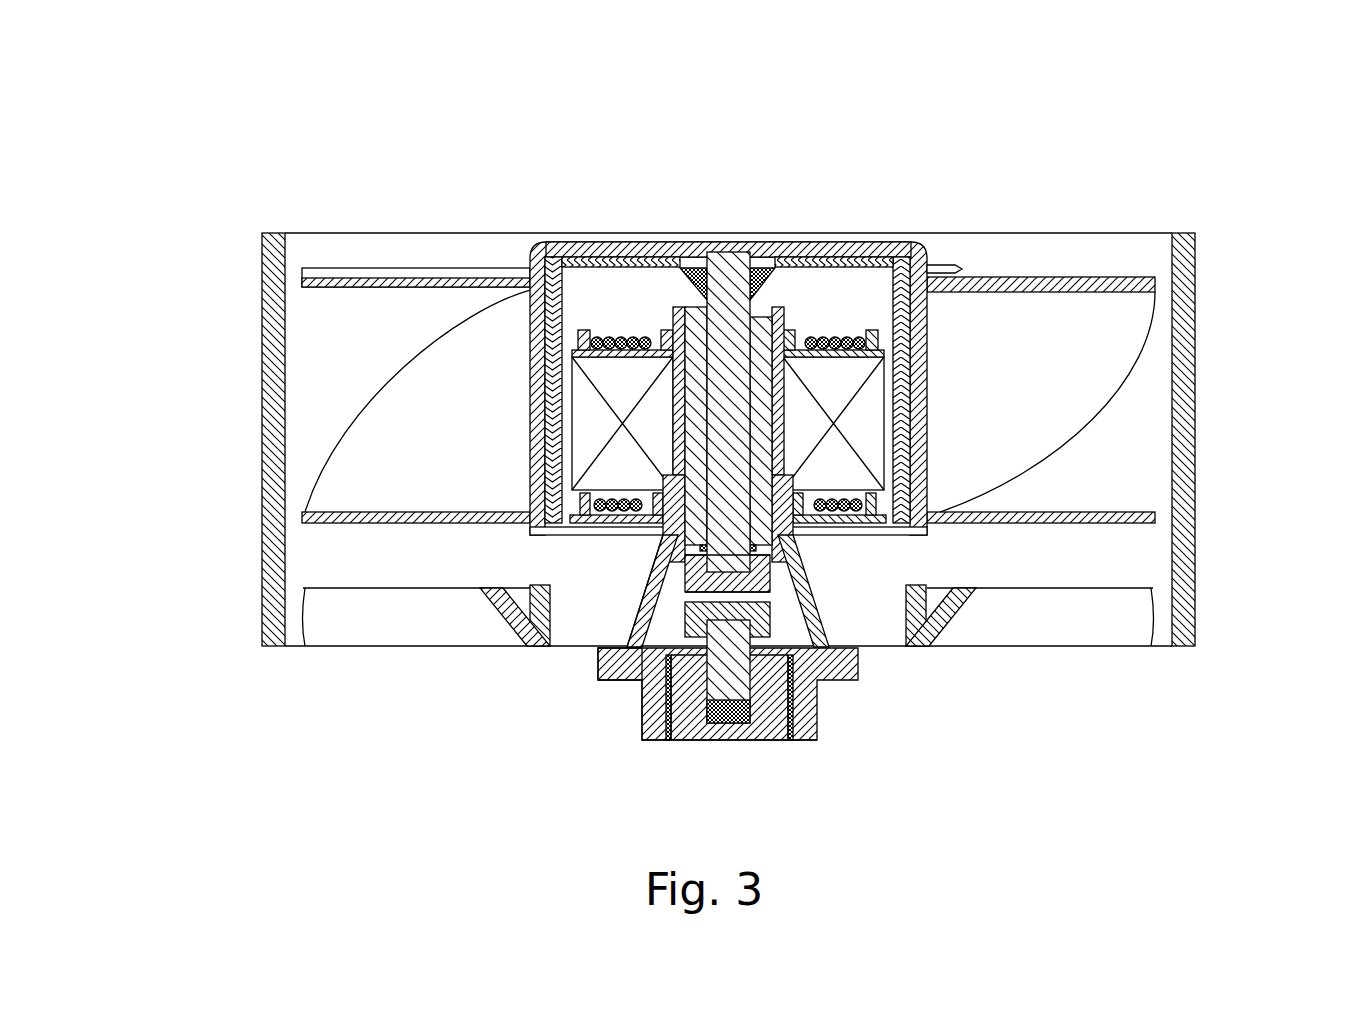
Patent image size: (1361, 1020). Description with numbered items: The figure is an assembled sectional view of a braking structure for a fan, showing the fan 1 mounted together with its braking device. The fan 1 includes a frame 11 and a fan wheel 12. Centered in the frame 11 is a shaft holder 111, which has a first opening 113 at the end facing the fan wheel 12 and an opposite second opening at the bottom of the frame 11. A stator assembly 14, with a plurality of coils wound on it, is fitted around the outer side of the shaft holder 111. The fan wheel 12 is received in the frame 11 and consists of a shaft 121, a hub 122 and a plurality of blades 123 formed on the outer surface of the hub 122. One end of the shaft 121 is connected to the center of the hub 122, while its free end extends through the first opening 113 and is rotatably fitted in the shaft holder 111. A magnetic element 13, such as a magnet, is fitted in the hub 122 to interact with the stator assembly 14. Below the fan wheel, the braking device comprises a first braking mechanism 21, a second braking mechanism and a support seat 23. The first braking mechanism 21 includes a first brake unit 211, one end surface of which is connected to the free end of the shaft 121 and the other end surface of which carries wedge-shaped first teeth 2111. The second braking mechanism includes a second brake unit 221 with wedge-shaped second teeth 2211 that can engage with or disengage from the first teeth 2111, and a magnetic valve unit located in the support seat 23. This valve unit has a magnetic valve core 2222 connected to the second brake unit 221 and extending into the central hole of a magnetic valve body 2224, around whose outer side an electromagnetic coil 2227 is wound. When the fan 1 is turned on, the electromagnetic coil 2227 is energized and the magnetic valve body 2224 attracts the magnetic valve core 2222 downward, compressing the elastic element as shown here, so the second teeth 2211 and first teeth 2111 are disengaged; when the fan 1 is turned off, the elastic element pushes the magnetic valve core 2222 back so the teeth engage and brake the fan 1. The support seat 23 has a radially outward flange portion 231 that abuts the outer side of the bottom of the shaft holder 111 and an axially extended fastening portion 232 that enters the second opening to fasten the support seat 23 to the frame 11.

The fan 1 is at (1210, 215).
The frame 11 is at (266, 293).
The fan wheel 12 is at (933, 236).
The shaft 121 is at (733, 298).
The hub 122 is at (668, 250).
The blades 123 is at (408, 268).
The magnetic element 13 is at (530, 258).
The stator assembly 14 is at (622, 328).
The shaft holder 111 is at (703, 317).
The first opening 113 is at (778, 297).
The first braking mechanism 21 is at (786, 563).
The first brake unit 211 is at (795, 565).
The first teeth 2111 is at (772, 575).
The second teeth 2211 is at (690, 602).
The second brake unit 221 is at (667, 652).
The magnetic valve core 2222 is at (753, 672).
The magnetic valve body 2224 is at (690, 728).
The electromagnetic coil 2227 is at (800, 715).
The support seat 23 is at (614, 698).
The flange portion 231 is at (603, 665).
The fastening portion 232 is at (654, 618).